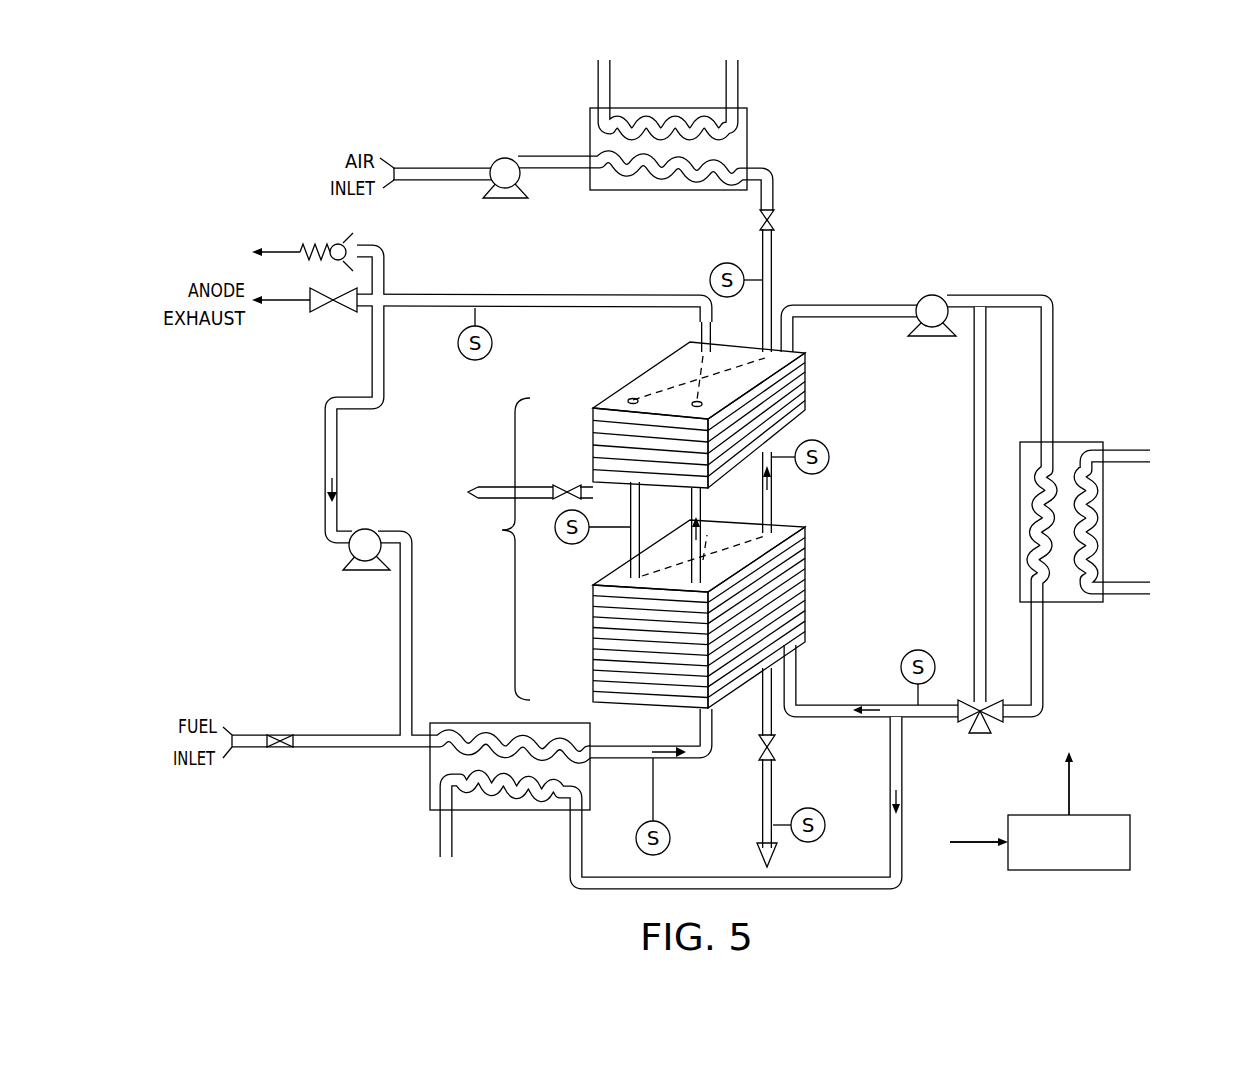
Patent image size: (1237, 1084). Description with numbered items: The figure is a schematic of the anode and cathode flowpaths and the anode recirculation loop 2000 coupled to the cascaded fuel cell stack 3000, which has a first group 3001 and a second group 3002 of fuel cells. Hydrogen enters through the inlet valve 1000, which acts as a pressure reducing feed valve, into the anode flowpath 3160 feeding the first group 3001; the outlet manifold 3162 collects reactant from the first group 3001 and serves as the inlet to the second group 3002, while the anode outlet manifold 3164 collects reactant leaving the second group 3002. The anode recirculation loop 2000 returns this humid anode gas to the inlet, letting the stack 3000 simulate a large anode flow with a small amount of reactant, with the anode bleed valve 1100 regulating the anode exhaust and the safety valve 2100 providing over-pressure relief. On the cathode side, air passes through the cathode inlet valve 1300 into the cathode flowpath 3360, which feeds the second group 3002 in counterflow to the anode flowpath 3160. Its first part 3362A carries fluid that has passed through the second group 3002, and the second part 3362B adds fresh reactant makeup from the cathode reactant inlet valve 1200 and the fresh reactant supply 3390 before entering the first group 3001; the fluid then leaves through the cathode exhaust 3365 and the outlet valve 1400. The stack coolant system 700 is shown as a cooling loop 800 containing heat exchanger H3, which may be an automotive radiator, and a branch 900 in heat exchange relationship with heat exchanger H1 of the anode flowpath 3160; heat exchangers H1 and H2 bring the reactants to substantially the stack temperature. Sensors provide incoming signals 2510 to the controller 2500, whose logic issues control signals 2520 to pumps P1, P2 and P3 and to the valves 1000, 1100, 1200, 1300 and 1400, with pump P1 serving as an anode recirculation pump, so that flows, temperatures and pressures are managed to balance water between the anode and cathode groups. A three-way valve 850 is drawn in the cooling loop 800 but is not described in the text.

The stack coolant system 700 is at (953, 509).
The cooling loop 800 is at (1010, 296).
The three-way valve 850 is at (978, 736).
The branch 900 is at (850, 890).
The inlet valve 1000 is at (280, 750).
The anode bleed valve 1100 is at (306, 308).
The cathode reactant inlet valve 1200 is at (565, 484).
The cathode inlet valve 1300 is at (760, 220).
The cathode outlet valve 1400 is at (774, 748).
The anode recirculation loop 2000 is at (532, 288).
The safety valve 2100 is at (300, 240).
The controller 2500 is at (1131, 845).
The incoming signals 2510 is at (968, 848).
The control signals 2520 is at (1072, 797).
The cascaded fuel cell stack 3000 is at (502, 530).
The first group 3001 is at (815, 520).
The second group 3002 is at (815, 338).
The anode flowpath 3160 is at (688, 762).
The outlet manifold 3162 is at (702, 520).
The anode outlet manifold 3164 is at (700, 333).
The cathode flowpath 3360 is at (772, 248).
The first part of intermediate manifold 3362A is at (632, 478).
The second part of intermediate manifold 3362B is at (629, 560).
The cathode exhaust 3365 is at (774, 778).
The fresh reactant supply 3390 is at (478, 484).
The pump P1 is at (366, 529).
The pump P2 is at (503, 158).
The pump P3 is at (926, 295).
The heat exchanger H1 is at (582, 779).
The heat exchanger H2 is at (742, 150).
The heat exchanger H3 is at (1100, 510).